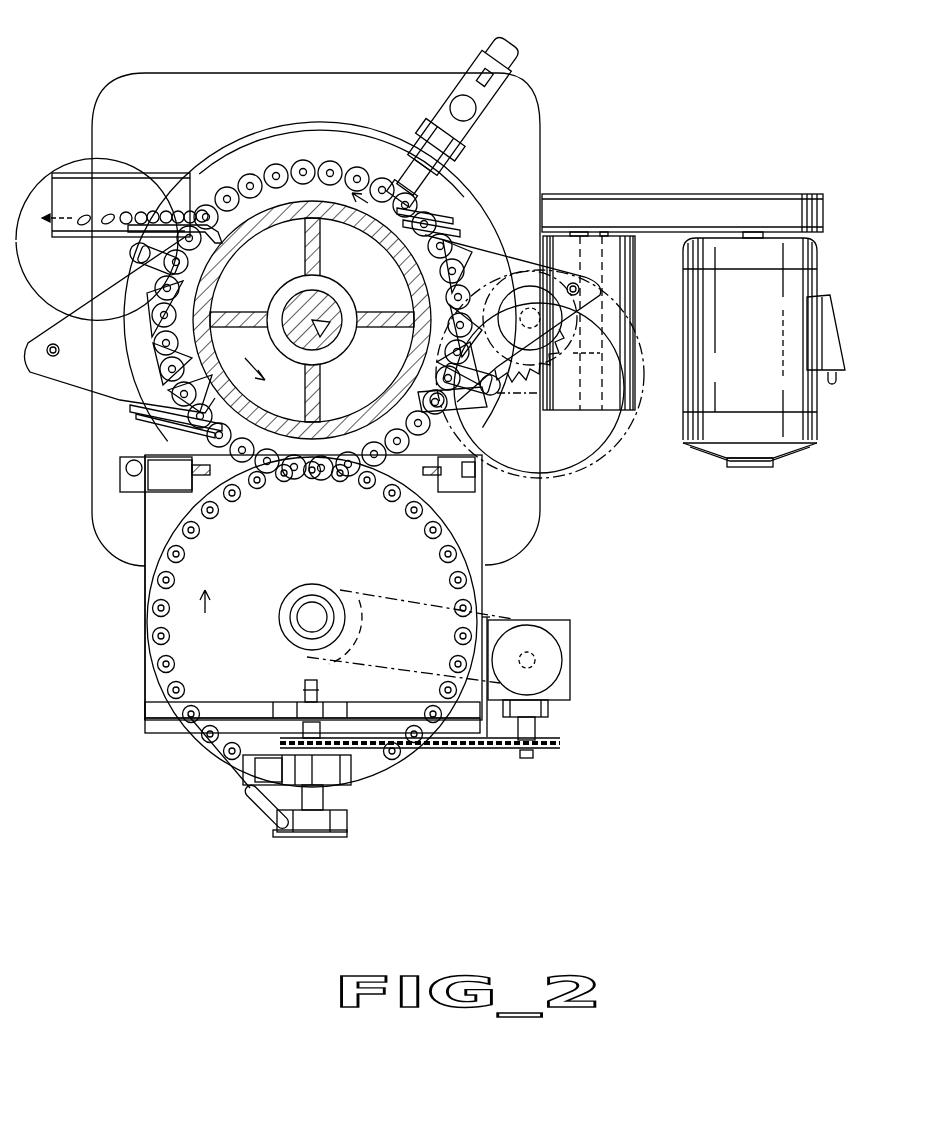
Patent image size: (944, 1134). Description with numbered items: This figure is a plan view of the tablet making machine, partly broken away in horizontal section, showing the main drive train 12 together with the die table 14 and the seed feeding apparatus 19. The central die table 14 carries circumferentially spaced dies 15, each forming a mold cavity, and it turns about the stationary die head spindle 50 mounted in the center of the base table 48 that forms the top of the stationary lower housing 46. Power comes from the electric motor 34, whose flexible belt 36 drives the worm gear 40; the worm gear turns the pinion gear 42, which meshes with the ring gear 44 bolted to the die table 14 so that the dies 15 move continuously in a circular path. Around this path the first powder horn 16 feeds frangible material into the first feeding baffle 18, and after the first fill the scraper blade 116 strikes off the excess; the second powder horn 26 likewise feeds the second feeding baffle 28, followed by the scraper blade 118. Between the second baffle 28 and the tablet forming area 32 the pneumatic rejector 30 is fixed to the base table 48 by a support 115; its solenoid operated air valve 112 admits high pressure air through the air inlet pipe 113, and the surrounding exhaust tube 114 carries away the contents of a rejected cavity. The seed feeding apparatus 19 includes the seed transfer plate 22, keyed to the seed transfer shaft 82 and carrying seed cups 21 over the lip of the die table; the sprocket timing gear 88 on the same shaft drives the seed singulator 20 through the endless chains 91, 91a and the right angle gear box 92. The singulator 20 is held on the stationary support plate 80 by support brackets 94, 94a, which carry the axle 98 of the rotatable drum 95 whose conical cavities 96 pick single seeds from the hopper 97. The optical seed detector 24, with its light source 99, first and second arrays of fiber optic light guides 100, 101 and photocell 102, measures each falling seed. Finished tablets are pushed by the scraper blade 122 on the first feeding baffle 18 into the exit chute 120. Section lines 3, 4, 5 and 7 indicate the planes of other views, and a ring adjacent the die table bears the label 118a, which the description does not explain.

The section line 3- 3 is at (818, 397).
The section line 4- 4 is at (312, 450).
The section line 5- 5 is at (122, 468).
The section line 7- 7 is at (501, 231).
The main drive train 12 is at (676, 196).
The die table 14 is at (358, 142).
The die 15 is at (245, 188).
The first powder horn 16 is at (112, 140).
The first feeding baffle 18 is at (148, 325).
The seed feeding apparatus 19 is at (148, 634).
The seed singulator 20 is at (247, 789).
The seed cup 21 is at (158, 586).
The seed transfer plate 22 is at (234, 567).
The optical seed detector 24 is at (140, 493).
The second powder horn 26 is at (610, 422).
The second feeding baffle 28 is at (445, 405).
The pneumatic rejector 30 is at (448, 93).
The tablet forming area 32 is at (216, 161).
The electric motor 34 is at (760, 341).
The flexible belt 36 is at (636, 197).
The worm gear 40 is at (580, 290).
The pinion gear 42 is at (558, 348).
The ring gear 44 is at (500, 236).
The lower housing 46 is at (540, 118).
The base table 48 is at (510, 90).
The die head spindle 50 is at (322, 298).
The stationary support plate 80 is at (148, 657).
The seed transfer shaft 82 is at (312, 617).
The sprocket timing gear 88 is at (346, 644).
The endless chain 91 is at (363, 573).
The drive chain 91a is at (468, 748).
The right angle gear box 92 is at (572, 632).
The support bracket 94 is at (292, 836).
The support bracket 94a is at (148, 708).
The rotatable drum 95 is at (352, 772).
The conical cavities 96 is at (348, 778).
The hopper 97 is at (246, 771).
The axle 98 is at (305, 690).
The light source 99 is at (143, 460).
The first array of fiber optic light guides 100 is at (227, 455).
The second array of fiber optic light guides 101 is at (398, 481).
The photocell 102 is at (480, 459).
The solenoid operated air valve 112 is at (470, 114).
The air inlet pipe 113 is at (453, 117).
The exhaust tube 114 is at (452, 158).
The support 115 is at (467, 84).
The scraper blade 116 is at (148, 420).
The scraper blade 118 is at (427, 213).
The wheel ring 118a is at (196, 284).
The exit chute 120 is at (66, 202).
The scraper blade 122 is at (271, 307).